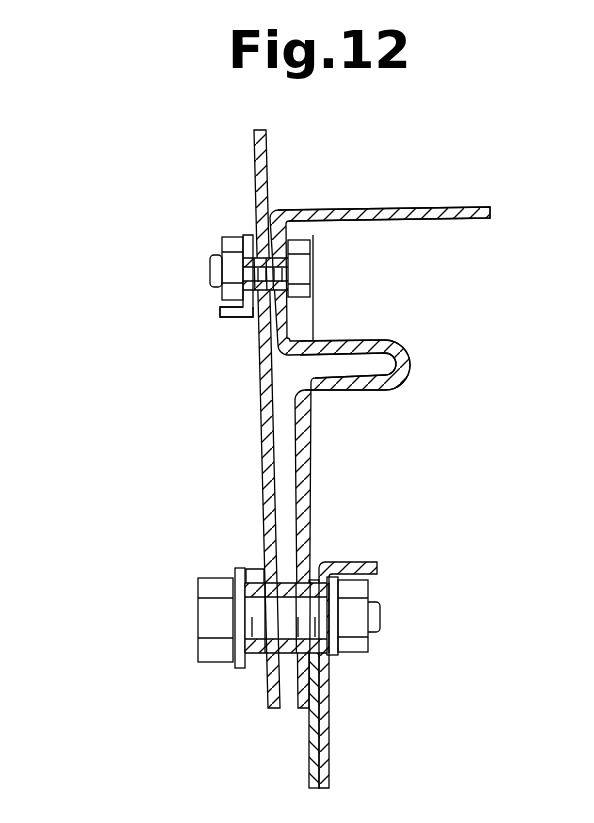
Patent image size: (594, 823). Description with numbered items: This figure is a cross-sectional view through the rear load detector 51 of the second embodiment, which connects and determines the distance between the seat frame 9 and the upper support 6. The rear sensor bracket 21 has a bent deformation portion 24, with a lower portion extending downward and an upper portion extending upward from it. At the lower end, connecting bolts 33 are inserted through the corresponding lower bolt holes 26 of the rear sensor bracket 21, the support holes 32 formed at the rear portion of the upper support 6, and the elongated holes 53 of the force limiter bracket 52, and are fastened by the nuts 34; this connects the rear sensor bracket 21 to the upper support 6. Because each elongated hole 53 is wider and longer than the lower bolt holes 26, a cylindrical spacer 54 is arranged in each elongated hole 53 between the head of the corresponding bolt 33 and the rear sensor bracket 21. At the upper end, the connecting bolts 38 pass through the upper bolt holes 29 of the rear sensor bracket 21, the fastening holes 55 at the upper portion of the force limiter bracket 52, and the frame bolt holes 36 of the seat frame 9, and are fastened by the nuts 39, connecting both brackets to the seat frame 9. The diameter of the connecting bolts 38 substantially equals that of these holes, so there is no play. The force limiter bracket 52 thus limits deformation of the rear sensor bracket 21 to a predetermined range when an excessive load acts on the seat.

The seat frame 9 is at (267, 138).
The rear sensor bracket 21 is at (457, 206).
The force limiter bracket 52 is at (271, 221).
The fastening holes 55 is at (247, 237).
The upper bolt holes 29 is at (300, 256).
The frame bolt holes 36 is at (222, 270).
The connecting bolts 38 is at (298, 283).
The nuts 39 is at (224, 297).
The rear load detector 51 is at (459, 319).
The deformation portion 24 is at (413, 370).
The cylindrical spacer 54 is at (257, 576).
The connecting bolts 33 is at (198, 592).
The nuts 34 is at (345, 578).
The support holes 32 is at (381, 617).
The lower bolt holes 26 is at (335, 635).
The elongated holes 53 is at (262, 657).
The upper support 6 is at (307, 744).